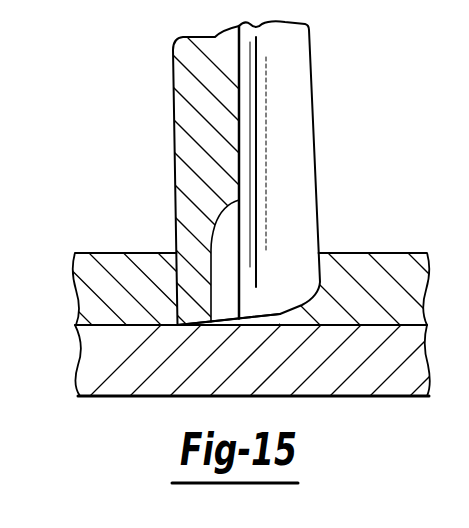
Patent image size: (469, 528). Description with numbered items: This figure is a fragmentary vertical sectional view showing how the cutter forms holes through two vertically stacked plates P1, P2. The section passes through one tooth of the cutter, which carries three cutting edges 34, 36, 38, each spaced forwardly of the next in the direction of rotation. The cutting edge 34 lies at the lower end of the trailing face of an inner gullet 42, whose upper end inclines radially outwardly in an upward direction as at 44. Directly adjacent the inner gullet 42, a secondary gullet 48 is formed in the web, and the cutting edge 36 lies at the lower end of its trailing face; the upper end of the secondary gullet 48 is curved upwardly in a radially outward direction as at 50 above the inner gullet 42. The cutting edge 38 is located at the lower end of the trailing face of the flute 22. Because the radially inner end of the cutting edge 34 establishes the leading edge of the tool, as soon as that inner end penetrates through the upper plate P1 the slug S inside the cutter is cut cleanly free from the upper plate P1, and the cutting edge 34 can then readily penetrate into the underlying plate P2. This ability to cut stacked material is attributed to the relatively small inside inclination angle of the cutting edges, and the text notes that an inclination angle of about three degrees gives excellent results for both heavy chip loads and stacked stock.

The flute 22 is at (297, 72).
The cutting edge 34 is at (183, 325).
The cutting edge 36 is at (233, 325).
The cutting edge 38 is at (283, 325).
The inner gullet 42 is at (187, 303).
The upper end of inner gullet 44 is at (192, 258).
The secondary gullet 48 is at (230, 243).
The upper end of secondary gullet 50 is at (224, 216).
The slug S is at (88, 262).
The upper plate P1 is at (357, 262).
The underlying plate P2 is at (90, 382).